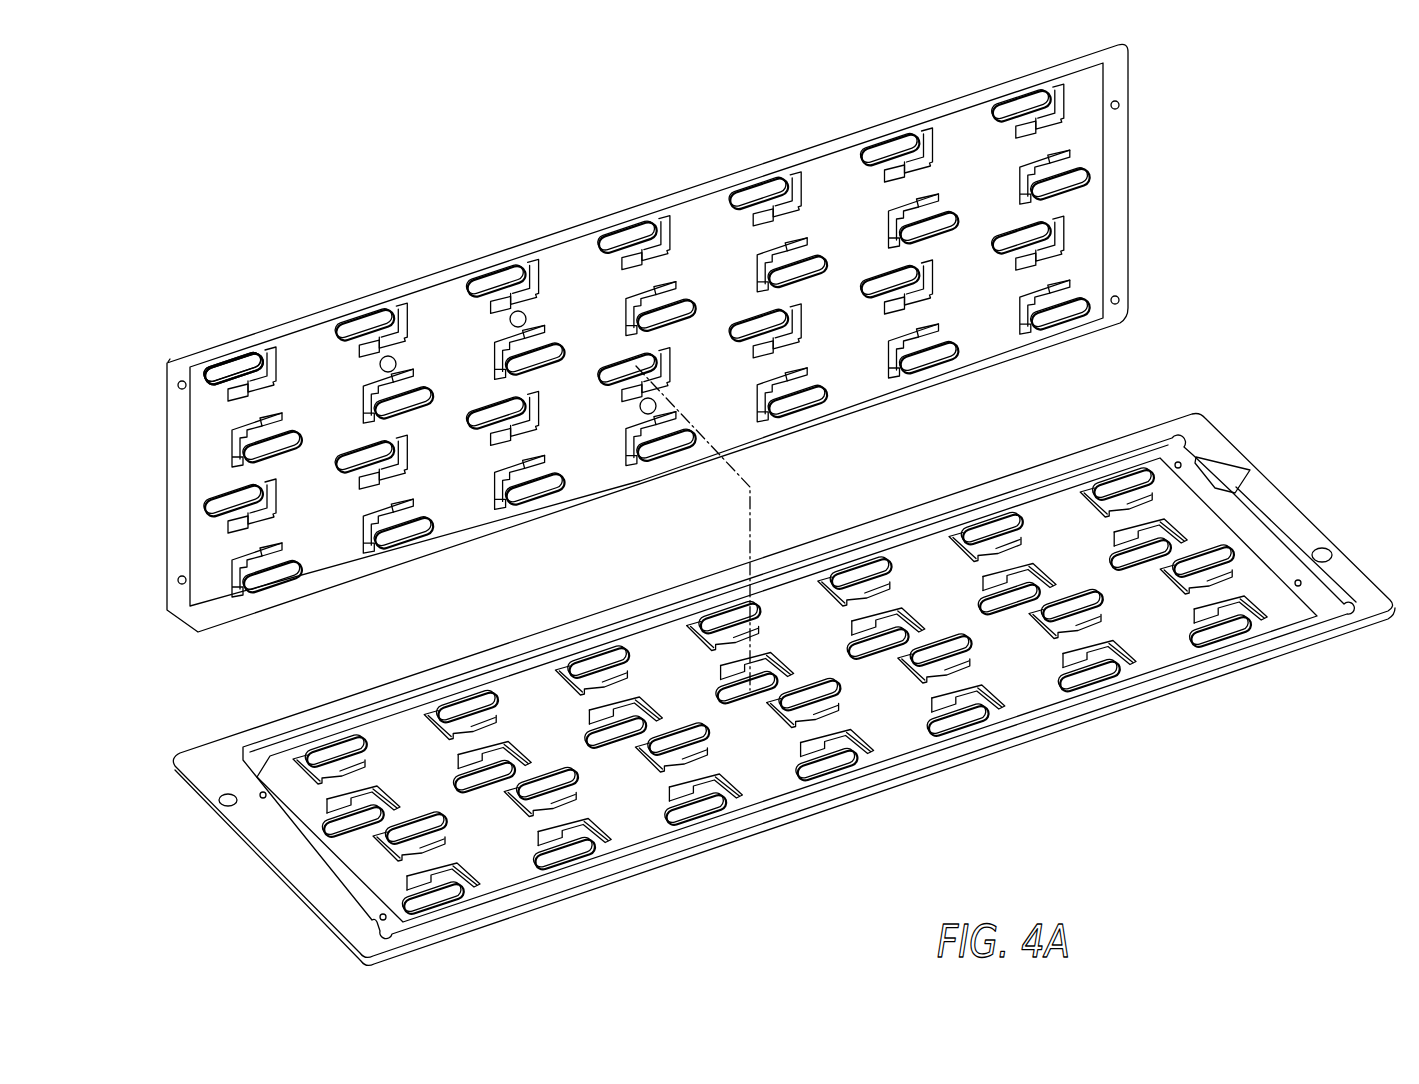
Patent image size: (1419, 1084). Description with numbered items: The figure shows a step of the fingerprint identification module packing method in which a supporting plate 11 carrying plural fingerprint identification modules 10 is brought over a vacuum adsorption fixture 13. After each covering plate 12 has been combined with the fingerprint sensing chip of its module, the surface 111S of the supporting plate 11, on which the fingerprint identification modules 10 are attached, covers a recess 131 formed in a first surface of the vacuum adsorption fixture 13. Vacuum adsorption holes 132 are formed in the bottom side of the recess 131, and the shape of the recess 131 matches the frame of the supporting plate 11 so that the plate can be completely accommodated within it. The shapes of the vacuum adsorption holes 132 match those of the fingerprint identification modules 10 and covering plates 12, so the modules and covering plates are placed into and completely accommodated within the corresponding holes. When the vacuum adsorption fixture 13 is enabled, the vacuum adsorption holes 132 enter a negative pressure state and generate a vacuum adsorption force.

The fingerprint identification module 10 is at (273, 373).
The supporting plate 11 is at (616, 338).
The surface of the supporting plate 111S is at (567, 262).
The covering plate 12 is at (233, 364).
The vacuum adsorption fixture 13 is at (781, 690).
The recess 131 is at (372, 723).
The vacuum adsorption hole 132 is at (232, 783).